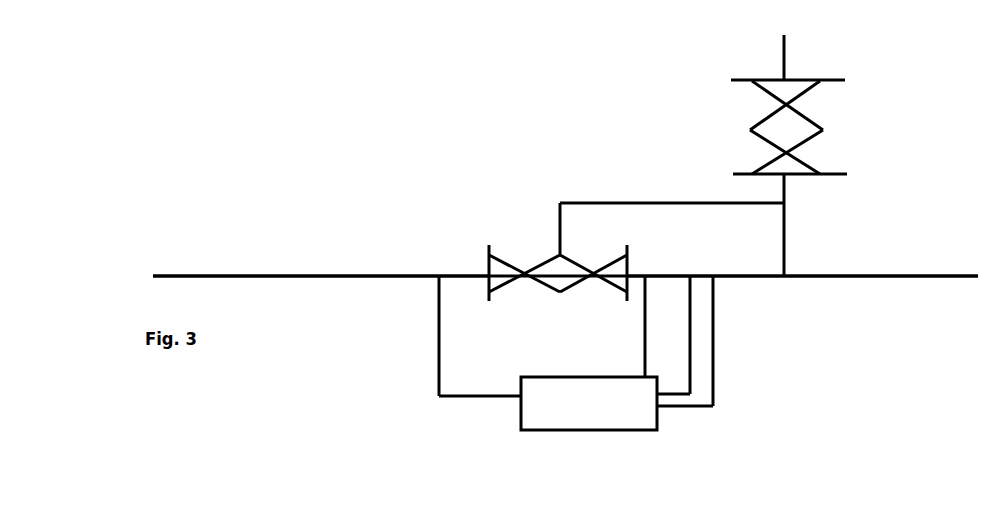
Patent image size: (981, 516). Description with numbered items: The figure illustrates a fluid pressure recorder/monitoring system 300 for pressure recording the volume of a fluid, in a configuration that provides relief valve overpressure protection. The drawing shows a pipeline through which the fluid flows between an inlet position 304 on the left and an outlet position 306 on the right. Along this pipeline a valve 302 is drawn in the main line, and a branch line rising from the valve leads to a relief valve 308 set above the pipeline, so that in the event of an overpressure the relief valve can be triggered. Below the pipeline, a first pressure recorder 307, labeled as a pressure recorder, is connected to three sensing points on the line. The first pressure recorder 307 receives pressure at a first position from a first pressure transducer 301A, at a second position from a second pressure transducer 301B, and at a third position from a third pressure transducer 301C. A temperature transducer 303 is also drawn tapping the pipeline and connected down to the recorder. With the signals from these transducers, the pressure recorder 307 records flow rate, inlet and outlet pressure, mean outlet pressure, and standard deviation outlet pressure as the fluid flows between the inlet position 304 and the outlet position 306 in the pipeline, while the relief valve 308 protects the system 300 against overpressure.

The system 300 is at (511, 130).
The first pressure transducer 301A is at (430, 357).
The second pressure transducer 301B is at (687, 305).
The third pressure transducer 301C is at (715, 330).
The valve 302 is at (558, 289).
The temperature transducer 303 is at (643, 313).
The pipeline inlet position 304 is at (225, 273).
The pipeline outlet position 306 is at (912, 272).
The first pressure recorder 307 is at (598, 431).
The bypass valve 308 is at (825, 122).